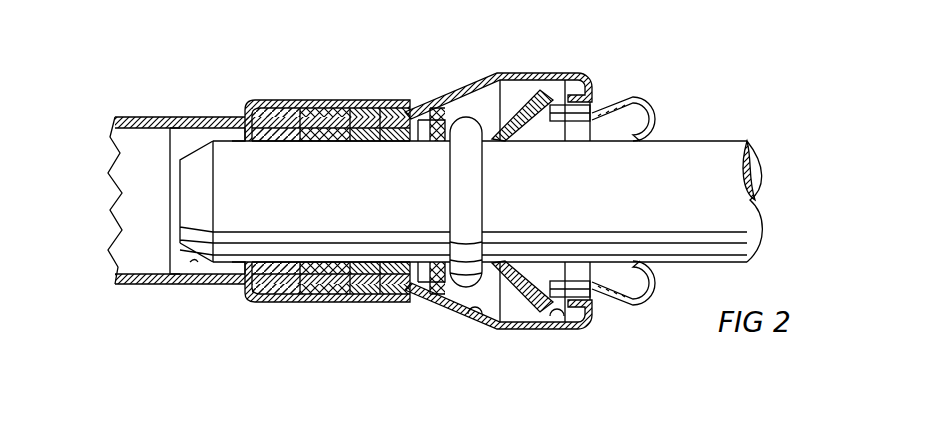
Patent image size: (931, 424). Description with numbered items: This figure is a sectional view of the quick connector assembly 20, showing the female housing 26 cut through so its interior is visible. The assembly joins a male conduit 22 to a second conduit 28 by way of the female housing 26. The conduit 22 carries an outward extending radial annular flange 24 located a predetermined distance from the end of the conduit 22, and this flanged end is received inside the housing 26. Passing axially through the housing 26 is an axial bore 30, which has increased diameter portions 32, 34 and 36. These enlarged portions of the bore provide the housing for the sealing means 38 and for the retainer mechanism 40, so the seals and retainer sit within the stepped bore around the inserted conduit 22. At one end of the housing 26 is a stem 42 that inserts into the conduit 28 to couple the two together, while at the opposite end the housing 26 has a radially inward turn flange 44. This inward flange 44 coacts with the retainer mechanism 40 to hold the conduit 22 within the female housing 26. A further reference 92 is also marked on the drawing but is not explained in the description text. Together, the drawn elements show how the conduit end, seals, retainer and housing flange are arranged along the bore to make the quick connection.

The quick connector assembly 20 is at (353, 72).
The conduit 22 is at (745, 137).
The radial annular flange 24 is at (466, 116).
The female housing 26 is at (442, 324).
The conduit 28 is at (130, 286).
The axial bore 30 is at (193, 284).
The increased diameter portion 32 is at (292, 302).
The increased diameter portion 34 is at (474, 316).
The increased diameter portion 36 is at (560, 318).
The sealing means 38 is at (330, 304).
The retainer mechanism 40 is at (642, 93).
The stem 42 is at (237, 285).
The radially inward turn flange 44 is at (594, 328).
The element 92 is at (500, 414).